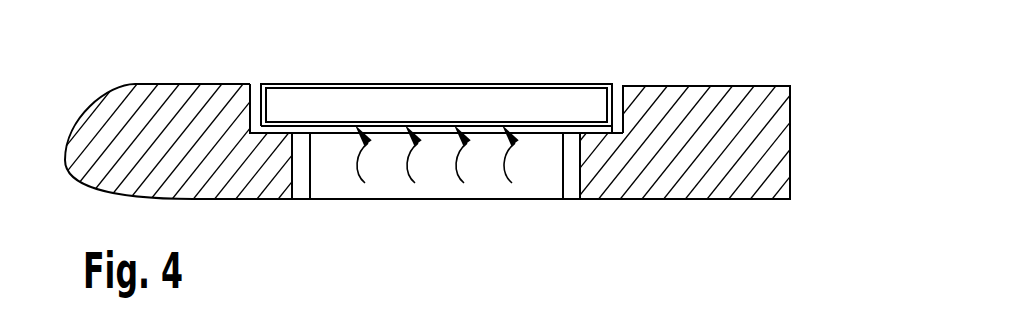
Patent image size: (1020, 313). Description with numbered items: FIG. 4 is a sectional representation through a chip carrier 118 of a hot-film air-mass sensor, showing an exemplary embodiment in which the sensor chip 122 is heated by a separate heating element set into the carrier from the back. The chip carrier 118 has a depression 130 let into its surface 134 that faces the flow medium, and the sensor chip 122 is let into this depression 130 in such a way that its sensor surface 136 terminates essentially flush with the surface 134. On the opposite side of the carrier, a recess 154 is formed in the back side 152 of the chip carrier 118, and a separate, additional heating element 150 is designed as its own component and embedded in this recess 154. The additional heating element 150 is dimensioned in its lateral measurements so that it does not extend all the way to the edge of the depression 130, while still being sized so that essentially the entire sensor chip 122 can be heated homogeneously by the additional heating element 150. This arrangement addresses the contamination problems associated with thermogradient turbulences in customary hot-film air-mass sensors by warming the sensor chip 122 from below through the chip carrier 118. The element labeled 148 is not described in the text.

The chip carrier 118 is at (742, 132).
The sensor chip 122 is at (542, 103).
The depression 130 is at (273, 136).
The surface 134 is at (722, 86).
The sensor surface 136 is at (402, 84).
The cavity wall 148 is at (326, 187).
The additional heating element 150 is at (430, 177).
The back side 152 is at (660, 200).
The recess 154 is at (580, 177).